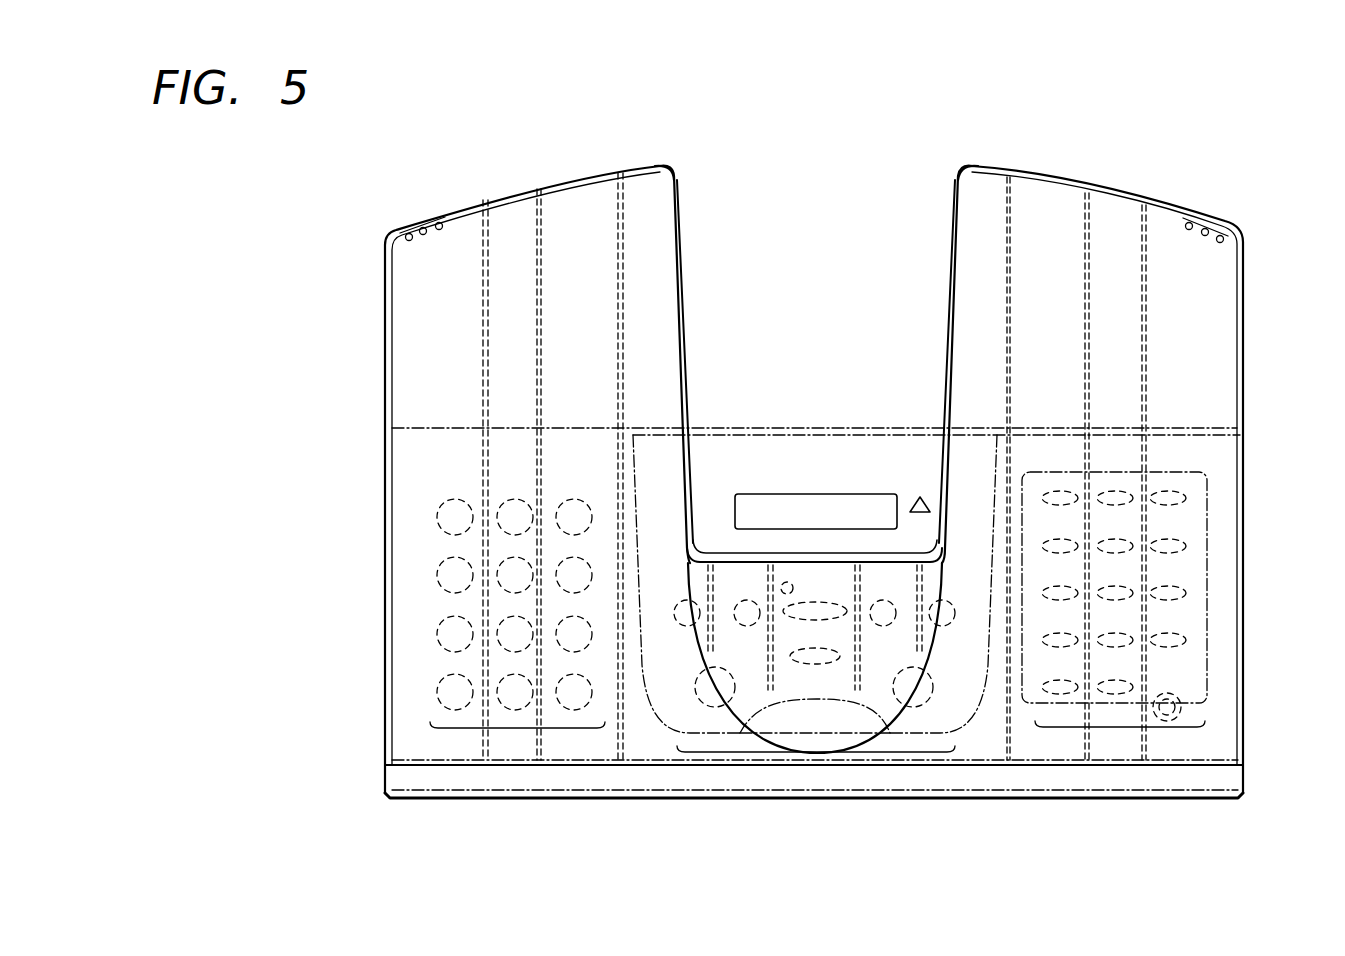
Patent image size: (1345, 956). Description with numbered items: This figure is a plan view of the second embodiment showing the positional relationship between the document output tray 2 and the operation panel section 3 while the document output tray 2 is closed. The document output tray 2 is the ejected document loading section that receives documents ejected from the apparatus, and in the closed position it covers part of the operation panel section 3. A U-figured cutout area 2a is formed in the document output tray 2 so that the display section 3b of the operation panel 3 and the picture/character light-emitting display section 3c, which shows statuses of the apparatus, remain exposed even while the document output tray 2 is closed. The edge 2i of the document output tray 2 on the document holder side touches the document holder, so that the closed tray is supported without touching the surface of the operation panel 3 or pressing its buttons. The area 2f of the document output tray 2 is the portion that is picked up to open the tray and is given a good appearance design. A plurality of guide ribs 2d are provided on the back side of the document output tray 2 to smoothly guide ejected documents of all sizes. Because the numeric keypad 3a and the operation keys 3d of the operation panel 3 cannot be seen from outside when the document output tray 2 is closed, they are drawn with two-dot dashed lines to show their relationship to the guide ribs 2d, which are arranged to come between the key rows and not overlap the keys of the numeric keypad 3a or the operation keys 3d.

The document output tray 2 is at (1228, 345).
The U-figured cutout area 2a is at (829, 268).
The guide ribs 2d is at (618, 178).
The area to be picked up 2f is at (417, 222).
The edge of the document output tray 2i is at (682, 167).
The operation panel section 3 is at (723, 448).
The numeric keypad 3a is at (515, 730).
The display section 3b is at (890, 500).
The picture/character light-emitting display section 3c is at (922, 497).
The operation keys 3d is at (817, 755).